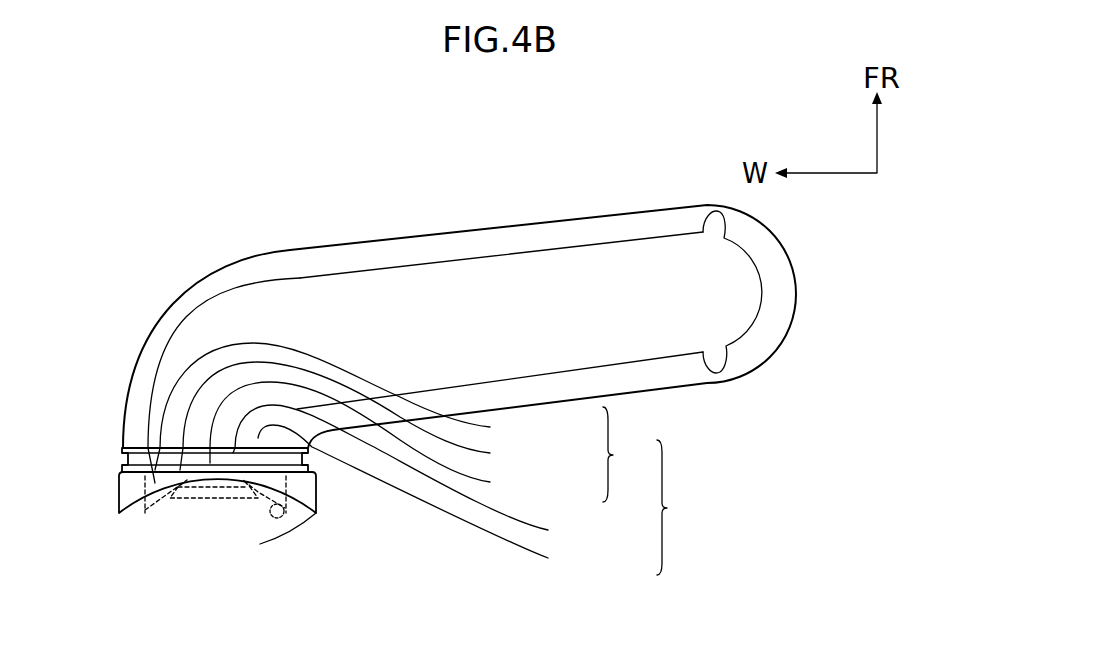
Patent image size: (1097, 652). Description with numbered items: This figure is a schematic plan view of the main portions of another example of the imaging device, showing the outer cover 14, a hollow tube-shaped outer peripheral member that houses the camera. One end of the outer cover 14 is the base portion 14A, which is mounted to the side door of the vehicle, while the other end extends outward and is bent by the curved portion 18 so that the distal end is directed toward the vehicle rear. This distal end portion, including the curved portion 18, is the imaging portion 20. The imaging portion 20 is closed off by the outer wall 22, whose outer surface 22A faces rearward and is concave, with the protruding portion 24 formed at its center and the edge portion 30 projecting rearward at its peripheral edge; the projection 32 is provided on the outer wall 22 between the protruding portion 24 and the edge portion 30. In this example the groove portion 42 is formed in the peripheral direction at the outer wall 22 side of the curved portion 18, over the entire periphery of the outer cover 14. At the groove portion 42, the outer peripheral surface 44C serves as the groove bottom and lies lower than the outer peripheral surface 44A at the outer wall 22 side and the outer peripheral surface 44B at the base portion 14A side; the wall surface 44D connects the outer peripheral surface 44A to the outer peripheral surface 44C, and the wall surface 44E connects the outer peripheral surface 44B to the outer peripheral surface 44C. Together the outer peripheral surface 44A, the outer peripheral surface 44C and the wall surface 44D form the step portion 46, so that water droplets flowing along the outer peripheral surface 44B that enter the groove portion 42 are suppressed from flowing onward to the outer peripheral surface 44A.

The outer cover 14 is at (530, 217).
The base portion 14A is at (770, 290).
The curved portion 18 is at (218, 278).
The imaging portion 20 is at (246, 335).
The outer wall 22 is at (178, 538).
The outer surface 22A is at (292, 510).
The protruding portion 24 is at (248, 500).
The edge portion 30 is at (284, 538).
The projection 32 is at (217, 500).
The groove portion 42 is at (683, 507).
The outer peripheral surface 44A is at (375, 406).
The outer peripheral surface 44B is at (456, 499).
The outer peripheral surface 44C is at (378, 440).
The wall surface 44D is at (363, 416).
The wall surface 44E is at (419, 475).
The step portion 46 is at (627, 454).